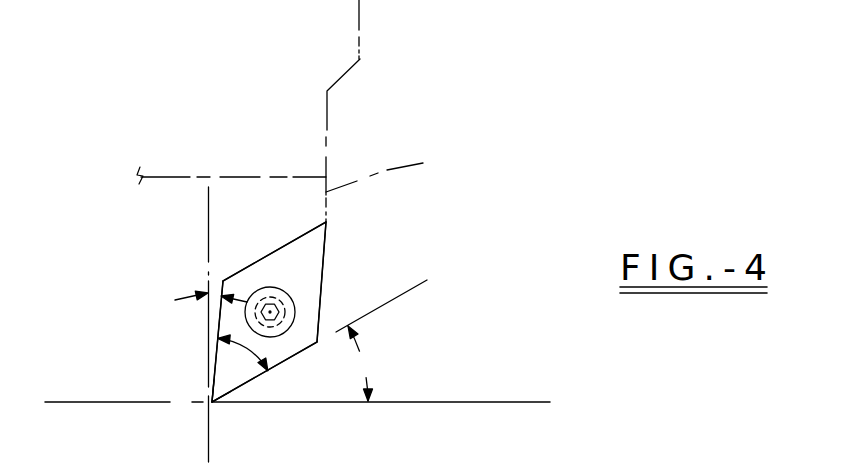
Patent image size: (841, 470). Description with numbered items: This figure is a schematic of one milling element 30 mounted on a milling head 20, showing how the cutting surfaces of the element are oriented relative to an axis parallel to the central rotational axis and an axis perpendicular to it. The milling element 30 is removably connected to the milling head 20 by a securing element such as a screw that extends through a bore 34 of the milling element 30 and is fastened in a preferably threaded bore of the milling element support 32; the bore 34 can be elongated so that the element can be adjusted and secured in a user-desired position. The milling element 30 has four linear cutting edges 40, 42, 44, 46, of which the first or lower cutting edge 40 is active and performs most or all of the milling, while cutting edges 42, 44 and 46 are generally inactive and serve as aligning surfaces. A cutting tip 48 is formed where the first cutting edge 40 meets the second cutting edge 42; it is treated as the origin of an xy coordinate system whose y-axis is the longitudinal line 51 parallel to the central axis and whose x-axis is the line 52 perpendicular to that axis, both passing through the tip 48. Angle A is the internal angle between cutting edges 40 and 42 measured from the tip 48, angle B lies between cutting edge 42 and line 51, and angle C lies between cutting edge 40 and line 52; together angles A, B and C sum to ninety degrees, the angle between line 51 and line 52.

The milling head 20 is at (372, 54).
The milling element 30 is at (331, 245).
The milling element support 32 is at (391, 169).
The bore 34 is at (278, 308).
The first cutting edge 40 is at (283, 362).
The second cutting edge 42 is at (219, 320).
The cutting edge 44 is at (282, 247).
The cutting edge 46 is at (323, 276).
The cutting tip 48 is at (216, 406).
The longitudinal line 51 is at (208, 230).
The line perpendicular to the central axis 52 is at (468, 401).
The angle A is at (247, 350).
The angle B is at (210, 292).
The angle C is at (360, 363).